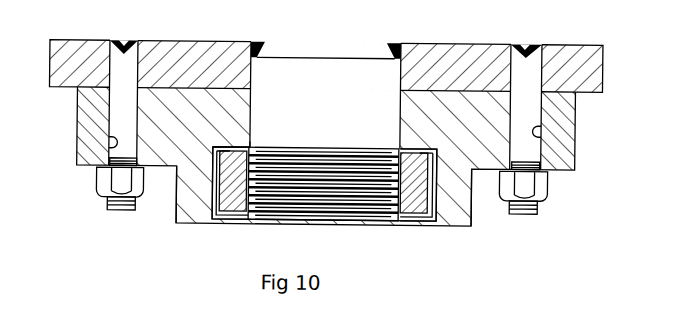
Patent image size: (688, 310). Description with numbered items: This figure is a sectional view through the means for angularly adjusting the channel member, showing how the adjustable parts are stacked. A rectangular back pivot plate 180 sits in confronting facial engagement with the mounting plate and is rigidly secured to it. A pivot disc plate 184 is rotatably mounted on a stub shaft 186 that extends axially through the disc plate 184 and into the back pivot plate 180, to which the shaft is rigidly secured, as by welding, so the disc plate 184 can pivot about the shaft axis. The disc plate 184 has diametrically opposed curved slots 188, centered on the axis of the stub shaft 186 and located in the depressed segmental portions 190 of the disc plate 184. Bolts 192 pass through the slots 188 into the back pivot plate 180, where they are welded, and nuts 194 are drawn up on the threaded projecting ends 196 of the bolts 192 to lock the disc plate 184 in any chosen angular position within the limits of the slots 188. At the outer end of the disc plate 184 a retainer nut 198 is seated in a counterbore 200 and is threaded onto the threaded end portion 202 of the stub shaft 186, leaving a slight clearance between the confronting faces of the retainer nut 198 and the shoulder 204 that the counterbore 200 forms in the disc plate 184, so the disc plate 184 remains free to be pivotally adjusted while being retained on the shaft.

The back pivot plate 180 is at (602, 66).
The pivot disc plate 184 is at (577, 149).
The stub shaft 186 is at (320, 72).
The curved slots 188 is at (110, 145).
The depressed segmental portions 190 is at (163, 174).
The bolts 192 is at (118, 110).
The nuts 194 is at (97, 188).
The threaded projecting ends 196 is at (108, 212).
The retainer nut 198 is at (425, 211).
The counterbore 200 is at (215, 214).
The threaded end portion 202 is at (368, 212).
The shoulder 204 is at (238, 150).